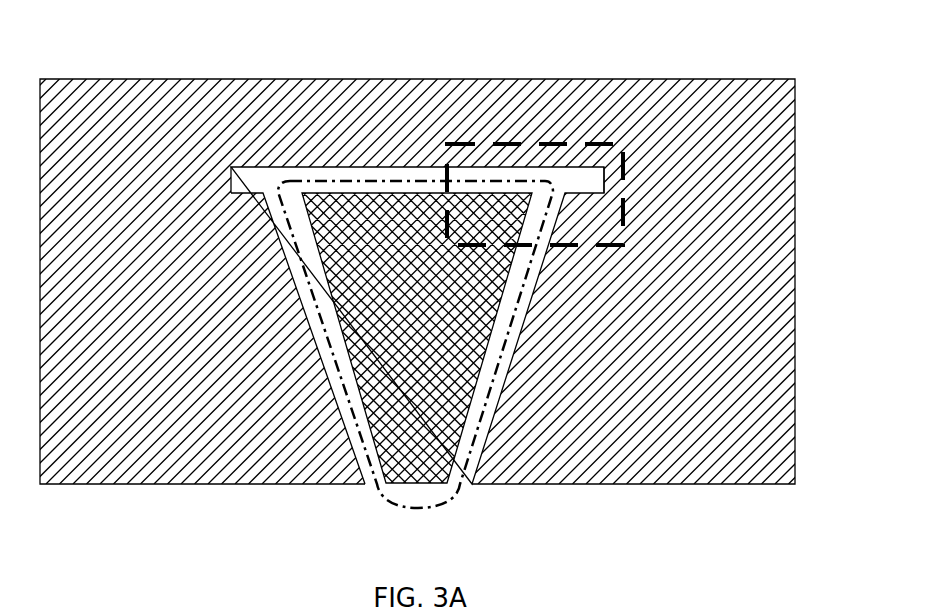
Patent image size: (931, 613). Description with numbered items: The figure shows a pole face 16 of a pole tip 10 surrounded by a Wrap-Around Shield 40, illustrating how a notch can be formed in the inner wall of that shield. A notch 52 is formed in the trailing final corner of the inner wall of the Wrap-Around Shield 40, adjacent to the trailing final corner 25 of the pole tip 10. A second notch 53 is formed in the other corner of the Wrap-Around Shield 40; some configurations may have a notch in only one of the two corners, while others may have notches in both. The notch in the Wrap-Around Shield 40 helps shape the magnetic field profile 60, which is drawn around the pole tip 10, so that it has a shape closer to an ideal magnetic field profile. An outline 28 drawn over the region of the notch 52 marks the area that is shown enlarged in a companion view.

The pole tip 10 is at (465, 290).
The pole face 16 is at (367, 462).
The trailing final corner 25 is at (533, 197).
The outline 28 is at (507, 147).
The Wrap-Around Shield 40 is at (152, 132).
The notch 52 is at (592, 166).
The notch 53 is at (248, 167).
The magnetic field profile 60 is at (462, 485).